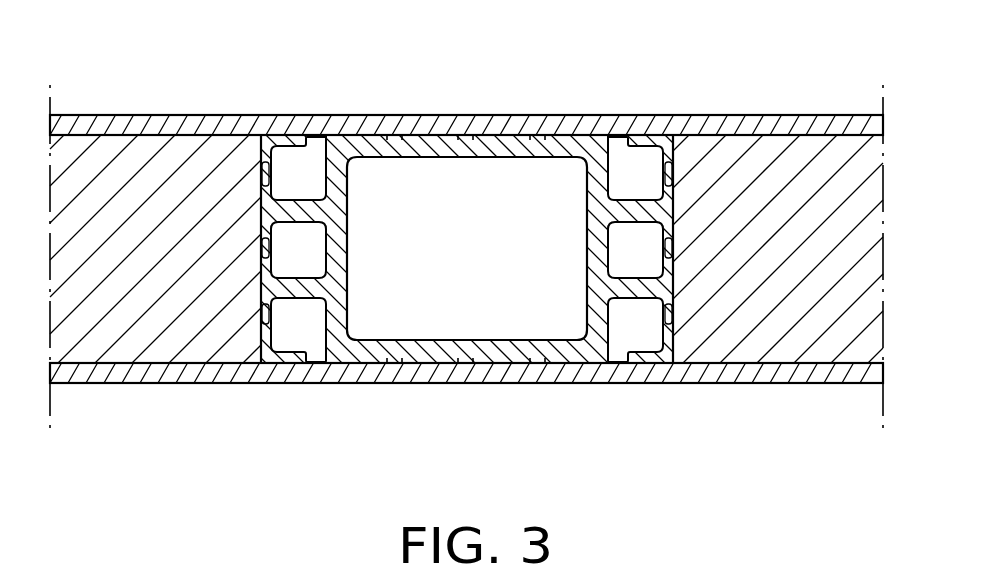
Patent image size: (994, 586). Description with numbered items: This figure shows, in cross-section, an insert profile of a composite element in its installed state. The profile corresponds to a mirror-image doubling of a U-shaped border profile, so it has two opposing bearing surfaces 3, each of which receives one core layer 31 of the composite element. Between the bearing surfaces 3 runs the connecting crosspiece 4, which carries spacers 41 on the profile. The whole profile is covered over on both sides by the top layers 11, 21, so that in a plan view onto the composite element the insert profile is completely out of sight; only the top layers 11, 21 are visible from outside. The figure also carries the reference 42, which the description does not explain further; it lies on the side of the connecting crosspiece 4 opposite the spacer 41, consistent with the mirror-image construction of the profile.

The top layer 11 is at (507, 115).
The top layer 21 is at (475, 383).
The core layer 31 is at (127, 303).
The bearing surface 3 is at (262, 282).
The connecting crosspiece 4 is at (466, 243).
The spacer 41 is at (440, 157).
The lower wall of hollow tube 42 is at (427, 340).